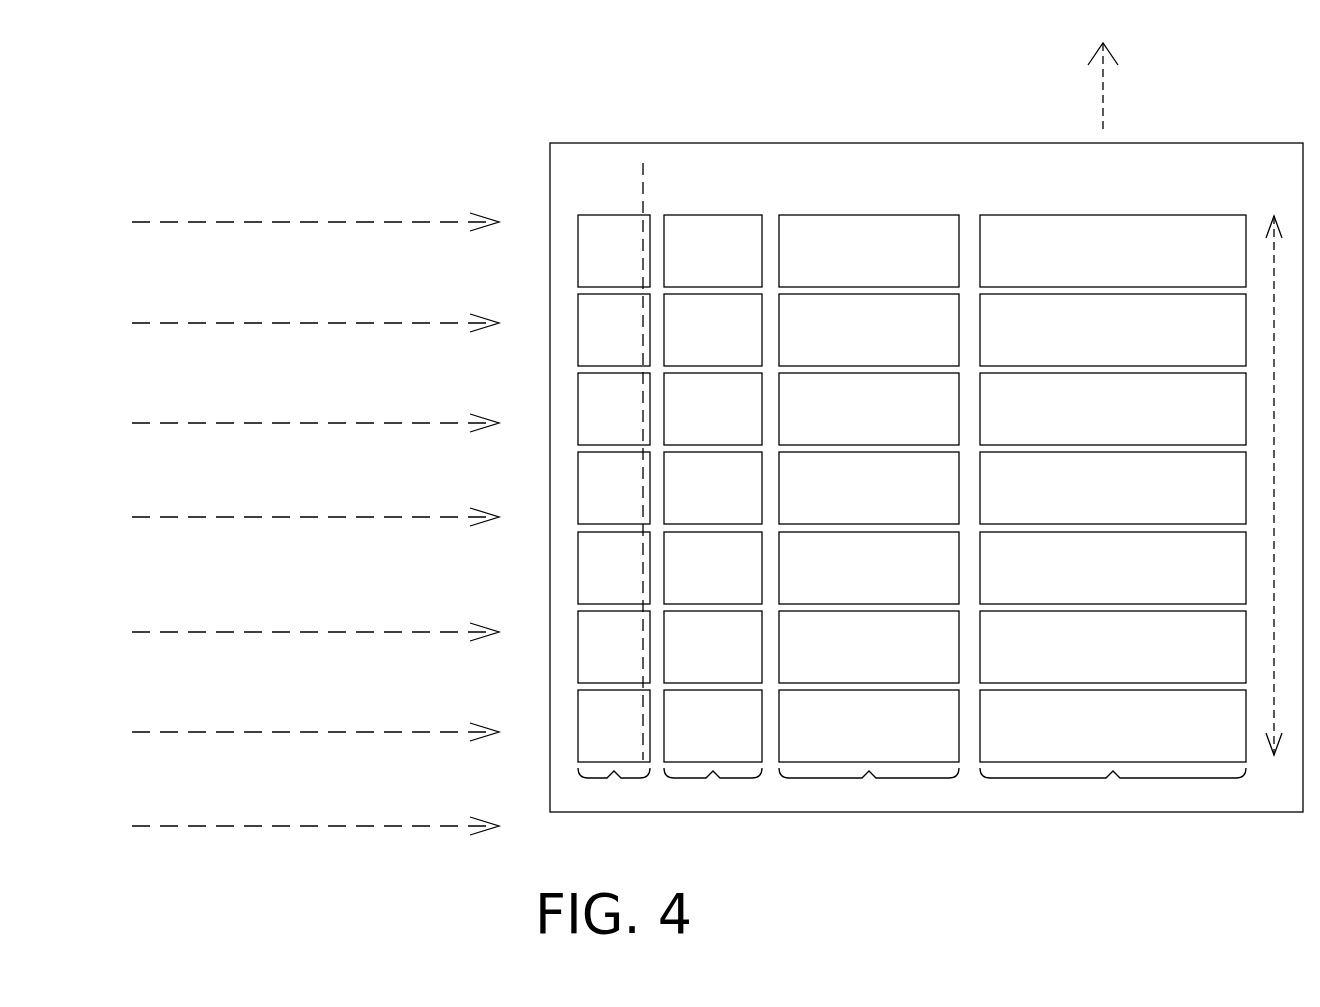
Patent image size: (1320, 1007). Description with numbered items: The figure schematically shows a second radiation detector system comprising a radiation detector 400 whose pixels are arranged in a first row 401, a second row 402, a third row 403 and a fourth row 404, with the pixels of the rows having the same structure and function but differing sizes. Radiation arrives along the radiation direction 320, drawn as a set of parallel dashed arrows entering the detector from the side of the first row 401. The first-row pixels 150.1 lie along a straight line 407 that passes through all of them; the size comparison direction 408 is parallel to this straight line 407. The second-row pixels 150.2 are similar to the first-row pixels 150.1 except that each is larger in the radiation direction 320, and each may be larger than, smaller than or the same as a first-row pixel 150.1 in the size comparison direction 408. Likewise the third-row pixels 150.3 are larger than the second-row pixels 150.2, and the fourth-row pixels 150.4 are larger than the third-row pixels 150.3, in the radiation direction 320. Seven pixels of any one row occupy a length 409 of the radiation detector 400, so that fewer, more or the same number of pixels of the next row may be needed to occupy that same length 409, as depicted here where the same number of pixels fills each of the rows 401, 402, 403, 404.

The radiation direction 320 is at (203, 222).
The radiation detector 400 is at (550, 187).
The first row 401 is at (614, 514).
The second row 402 is at (713, 514).
The third row 403 is at (869, 514).
The fourth row 404 is at (1113, 514).
The straight line 407 is at (643, 187).
The size comparison direction 408 is at (1103, 95).
The length 409 is at (1274, 265).
The first-row pixels 150.1 is at (583, 267).
The second-row pixels 150.2 is at (682, 267).
The third-row pixels 150.3 is at (833, 267).
The fourth-row pixels 150.4 is at (1082, 267).